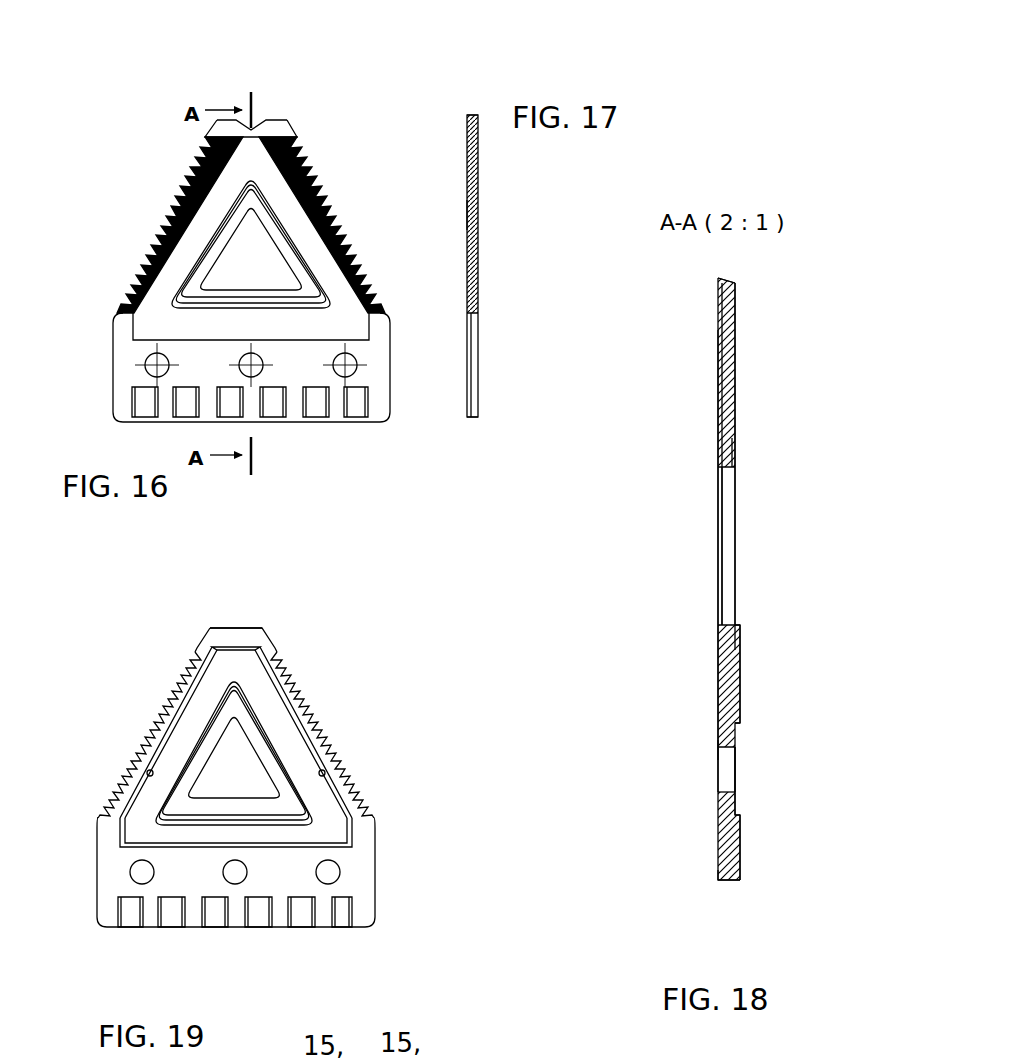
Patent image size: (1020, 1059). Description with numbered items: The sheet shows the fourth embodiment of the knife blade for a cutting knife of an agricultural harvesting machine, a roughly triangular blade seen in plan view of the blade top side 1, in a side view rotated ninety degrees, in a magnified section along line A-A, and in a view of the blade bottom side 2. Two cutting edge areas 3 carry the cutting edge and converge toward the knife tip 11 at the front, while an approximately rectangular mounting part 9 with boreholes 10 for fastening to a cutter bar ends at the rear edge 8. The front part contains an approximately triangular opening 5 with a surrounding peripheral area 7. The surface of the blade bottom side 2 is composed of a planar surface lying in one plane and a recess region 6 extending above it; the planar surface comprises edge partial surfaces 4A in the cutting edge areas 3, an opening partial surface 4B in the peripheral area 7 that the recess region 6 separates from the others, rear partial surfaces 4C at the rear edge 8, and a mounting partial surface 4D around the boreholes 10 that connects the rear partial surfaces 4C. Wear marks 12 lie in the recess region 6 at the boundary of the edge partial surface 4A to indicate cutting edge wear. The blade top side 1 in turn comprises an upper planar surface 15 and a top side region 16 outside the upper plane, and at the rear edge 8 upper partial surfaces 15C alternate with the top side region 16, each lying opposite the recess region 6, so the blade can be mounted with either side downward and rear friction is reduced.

In FIG. 16, the blade top side 1 is at (272, 102).
In FIG. 17, the blade top side 1 is at (496, 207).
In FIG. 18, the blade top side 1 is at (786, 398).
In FIG. 17, the blade bottom side 2 is at (455, 212).
In FIG. 18, the blade bottom side 2 is at (642, 775).
In FIG. 19, the blade bottom side 2 is at (310, 620).
In FIG. 16, the cutting edge areas 3 is at (176, 203).
In FIG. 19, the cutting edge areas 3 is at (160, 717).
In FIG. 18, the edge partial surface 4A is at (716, 303).
In FIG. 19, the edge partial surface 4A is at (172, 700).
In FIG. 18, the opening partial surface 4B is at (716, 437).
In FIG. 19, the opening partial surface 4B is at (238, 710).
In FIG. 18, the rear partial surface 4C is at (716, 862).
In FIG. 19, the rear partial surface 4C is at (362, 920).
In FIG. 18, the mounting partial surface 4D is at (716, 800).
In FIG. 19, the mounting partial surface 4D is at (373, 868).
In FIG. 16, the opening 5 is at (265, 277).
In FIG. 18, the opening 5 is at (736, 540).
In FIG. 19, the opening 5 is at (246, 786).
In FIG. 18, the recess region 6 is at (716, 360).
In FIG. 19, the recess region 6 is at (350, 793).
In FIG. 16, the peripheral area 7 is at (205, 290).
In FIG. 18, the peripheral area 7 is at (738, 441).
In FIG. 19, the peripheral area 7 is at (267, 753).
In FIG. 16, the rear edge 8 is at (338, 423).
In FIG. 17, the rear edge 8 is at (475, 418).
In FIG. 18, the rear edge 8 is at (720, 882).
In FIG. 16, the mounting part 9 is at (309, 379).
In FIG. 19, the mounting part 9 is at (295, 893).
In FIG. 16, the boreholes 10 is at (145, 365).
In FIG. 18, the boreholes 10 is at (720, 755).
In FIG. 19, the boreholes 10 is at (130, 870).
In FIG. 16, the knife tip 11 is at (258, 118).
In FIG. 17, the knife tip 11 is at (473, 113).
In FIG. 18, the knife tip 11 is at (738, 290).
In FIG. 19, the knife tip 11 is at (232, 632).
In FIG. 19, the wear marks 12 is at (147, 778).
In FIG. 18, the upper planar surface 15 is at (740, 345).
In FIG. 18, the upper partial surfaces 15C is at (792, 849).
In FIG. 18, the top side region 16 is at (733, 462).